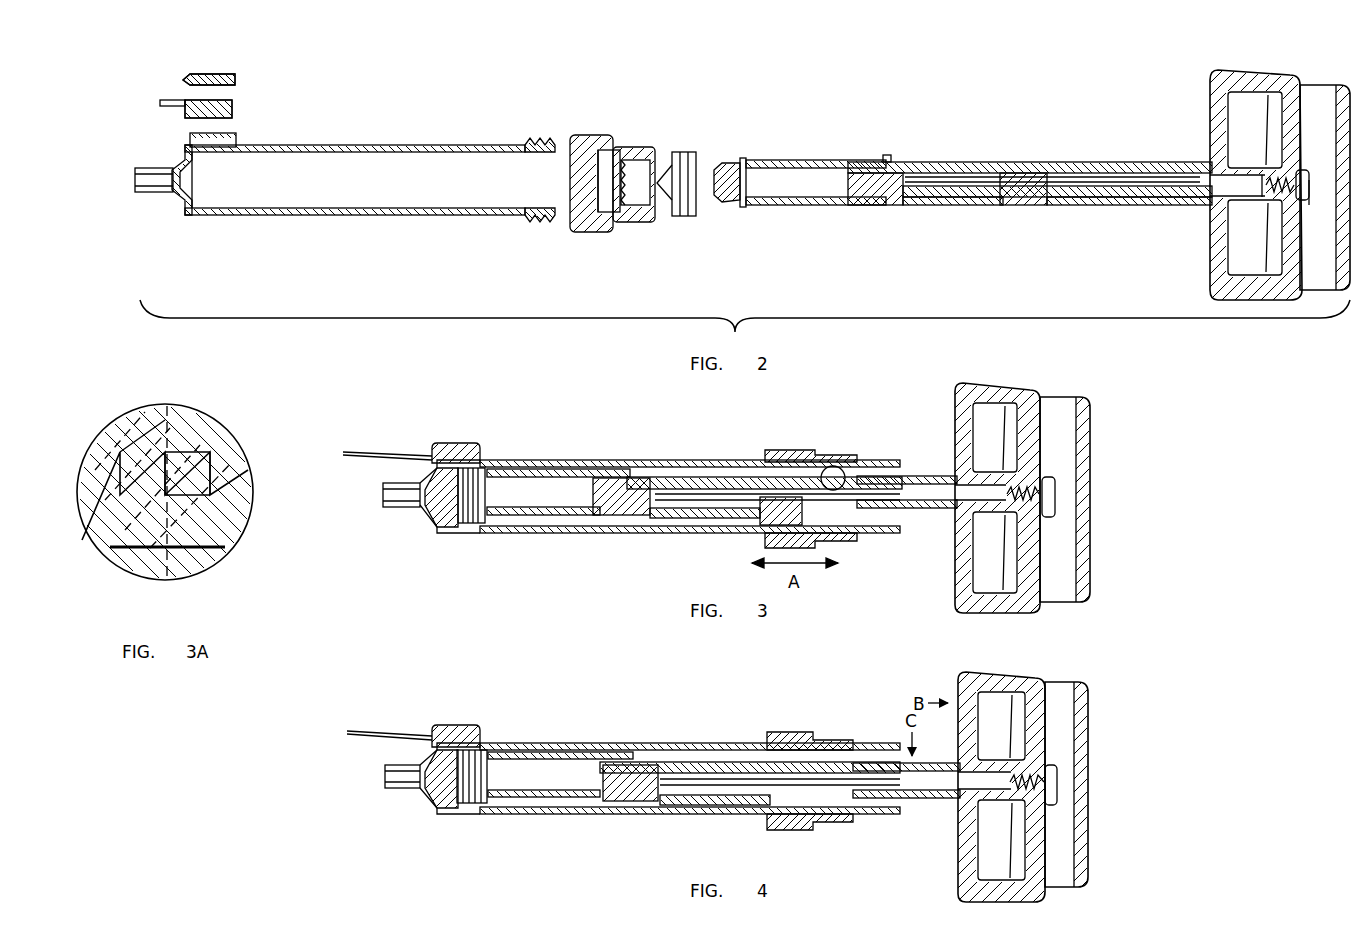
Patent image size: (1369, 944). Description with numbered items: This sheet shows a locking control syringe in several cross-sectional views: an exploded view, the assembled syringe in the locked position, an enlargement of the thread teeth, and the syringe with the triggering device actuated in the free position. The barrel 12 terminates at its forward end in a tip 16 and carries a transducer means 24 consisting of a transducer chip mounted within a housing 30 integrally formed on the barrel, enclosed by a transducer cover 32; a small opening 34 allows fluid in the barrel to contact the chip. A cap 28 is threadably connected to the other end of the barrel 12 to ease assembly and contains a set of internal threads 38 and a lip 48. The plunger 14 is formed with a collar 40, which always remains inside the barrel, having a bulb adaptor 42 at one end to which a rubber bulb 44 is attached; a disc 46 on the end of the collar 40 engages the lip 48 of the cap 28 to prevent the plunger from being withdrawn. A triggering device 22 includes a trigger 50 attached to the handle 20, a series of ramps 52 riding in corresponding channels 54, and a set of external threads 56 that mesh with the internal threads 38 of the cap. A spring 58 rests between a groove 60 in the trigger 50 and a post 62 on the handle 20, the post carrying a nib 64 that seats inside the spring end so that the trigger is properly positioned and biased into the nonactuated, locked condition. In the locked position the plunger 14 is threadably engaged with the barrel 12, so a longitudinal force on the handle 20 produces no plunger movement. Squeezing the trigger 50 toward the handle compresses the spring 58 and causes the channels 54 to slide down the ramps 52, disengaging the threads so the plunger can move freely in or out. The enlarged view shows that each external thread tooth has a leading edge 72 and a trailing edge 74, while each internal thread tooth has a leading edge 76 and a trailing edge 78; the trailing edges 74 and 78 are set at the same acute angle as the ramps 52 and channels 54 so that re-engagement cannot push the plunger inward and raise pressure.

In FIG. 2, the barrel 12 is at (372, 145).
In FIG. 3, the barrel 12 is at (665, 460).
In FIG. 4, the barrel 12 is at (610, 743).
In FIG. 2, the plunger 14 is at (855, 158).
In FIG. 3, the plunger 14 is at (560, 470).
In FIG. 4, the plunger 14 is at (532, 752).
In FIG. 2, the needle tip / nozzle 16 is at (148, 168).
In FIG. 3, the needle tip / nozzle 16 is at (400, 507).
In FIG. 4, the needle tip / nozzle 16 is at (400, 790).
In FIG. 2, the handle 20 is at (1308, 85).
In FIG. 3, the handle 20 is at (1095, 555).
In FIG. 4, the handle 20 is at (1090, 722).
In FIG. 2, the triggering device 22 is at (1165, 100).
In FIG. 2, the transducer means 24 is at (158, 82).
In FIG. 3, the transducer means 24 is at (462, 440).
In FIG. 4, the transducer means 24 is at (452, 720).
In FIG. 2, the cap 28 is at (160, 110).
In FIG. 2, the housing 30 is at (238, 140).
In FIG. 2, the transducer cover 32 is at (235, 78).
In FIG. 2, the small opening 34 is at (205, 160).
In FIG. 2, the internal threads 38 is at (652, 195).
In FIG. 3A, the internal threads 38 is at (150, 425).
In FIG. 3, the internal threads 38 is at (811, 499).
In FIG. 4, the internal threads 38 is at (835, 760).
In FIG. 2, the collar 40 is at (790, 206).
In FIG. 2, the bulb adaptor 42 is at (722, 163).
In FIG. 2, the rubber bulb 44 is at (688, 150).
In FIG. 2, the disc 46 is at (887, 155).
In FIG. 2, the lip 48 is at (598, 155).
In FIG. 2, the trigger 50 is at (1235, 70).
In FIG. 3, the trigger 50 is at (982, 613).
In FIG. 4, the trigger 50 is at (990, 673).
In FIG. 2, the ramps 52 is at (895, 205).
In FIG. 3, the ramps 52 is at (770, 512).
In FIG. 4, the ramps 52 is at (645, 815).
In FIG. 2, the channels 54 is at (1015, 205).
In FIG. 3, the channels 54 is at (620, 515).
In FIG. 2, the external threads 56 is at (975, 162).
In FIG. 3A, the external threads 56 is at (145, 525).
In FIG. 3, the external threads 56 is at (730, 478).
In FIG. 4, the external threads 56 is at (690, 762).
In FIG. 2, the spring 58 is at (1290, 180).
In FIG. 3, the spring 58 is at (1048, 490).
In FIG. 4, the spring 58 is at (1052, 782).
In FIG. 2, the groove 60 is at (1250, 200).
In FIG. 2, the post 62 is at (1310, 195).
In FIG. 2, the nib 64 is at (1306, 205).
In FIG. 3A, the leading edge 72 is at (185, 535).
In FIG. 3A, the trailing edge 74 is at (215, 530).
In FIG. 3A, the leading edge 76 is at (190, 440).
In FIG. 3A, the trailing edge 78 is at (195, 430).